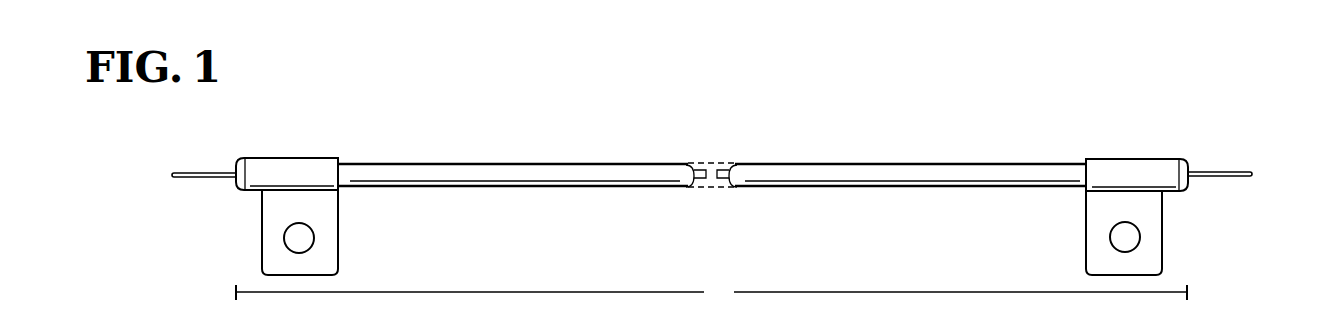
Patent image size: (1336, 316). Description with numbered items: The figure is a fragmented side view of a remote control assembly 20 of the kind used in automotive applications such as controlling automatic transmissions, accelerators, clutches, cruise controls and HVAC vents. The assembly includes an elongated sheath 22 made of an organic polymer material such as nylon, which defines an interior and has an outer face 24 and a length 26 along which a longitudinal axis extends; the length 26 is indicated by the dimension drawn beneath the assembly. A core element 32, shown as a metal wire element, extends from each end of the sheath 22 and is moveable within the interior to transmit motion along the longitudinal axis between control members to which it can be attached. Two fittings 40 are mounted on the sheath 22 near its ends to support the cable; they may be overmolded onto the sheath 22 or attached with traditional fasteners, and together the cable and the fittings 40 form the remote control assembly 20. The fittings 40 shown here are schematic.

The remote control assembly 20 is at (1029, 128).
The sheath 22 is at (803, 178).
The outer face 24 is at (872, 163).
The length 26 is at (711, 295).
The core element 32 is at (1222, 173).
The fittings 40 is at (290, 158).